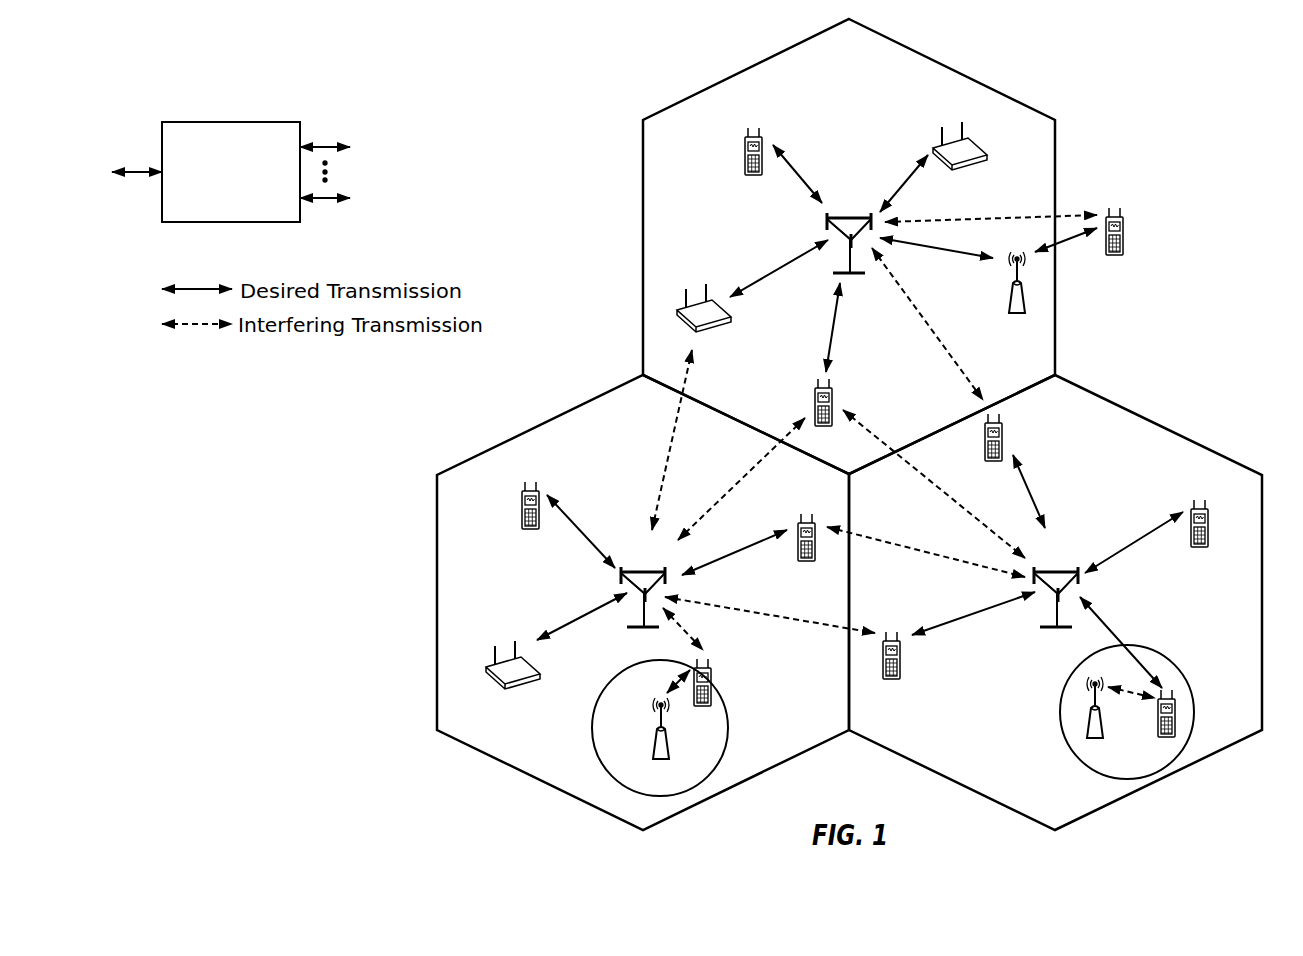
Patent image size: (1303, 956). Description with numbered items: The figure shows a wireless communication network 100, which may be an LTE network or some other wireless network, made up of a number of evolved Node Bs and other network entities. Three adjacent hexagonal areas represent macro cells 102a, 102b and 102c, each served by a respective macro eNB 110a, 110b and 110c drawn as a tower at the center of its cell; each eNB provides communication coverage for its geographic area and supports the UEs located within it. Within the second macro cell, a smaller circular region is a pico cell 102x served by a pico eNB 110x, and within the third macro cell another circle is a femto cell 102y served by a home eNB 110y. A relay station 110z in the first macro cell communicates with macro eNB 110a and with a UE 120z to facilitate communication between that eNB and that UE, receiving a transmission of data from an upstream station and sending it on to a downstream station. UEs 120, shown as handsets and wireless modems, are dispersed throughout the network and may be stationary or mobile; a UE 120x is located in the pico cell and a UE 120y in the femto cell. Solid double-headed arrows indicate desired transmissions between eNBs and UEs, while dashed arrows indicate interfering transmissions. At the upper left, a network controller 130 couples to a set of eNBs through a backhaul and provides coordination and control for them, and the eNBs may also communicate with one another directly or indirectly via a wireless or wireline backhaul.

The wireless communication network 100 is at (1194, 86).
The macro cell 102a is at (957, 71).
The macro cell 102b is at (540, 425).
The macro cell 102c is at (1163, 427).
The pico cell 102x is at (612, 679).
The femto cell 102y is at (1172, 639).
The macro eNB 110a is at (849, 217).
The macro eNB 110b is at (644, 570).
The macro eNB 110c is at (1057, 571).
The pico eNB 110x is at (668, 750).
The home eNB 110y is at (1103, 727).
The relay station 110z is at (1008, 302).
The UE 120 is at (745, 146).
The UE 120x is at (712, 676).
The UE 120y is at (1158, 733).
The UE 120z is at (1123, 247).
The network controller 130 is at (226, 122).